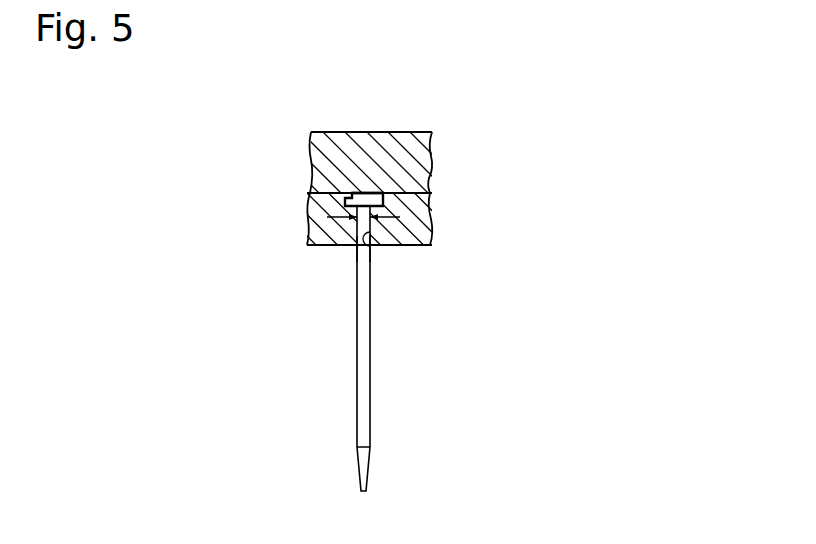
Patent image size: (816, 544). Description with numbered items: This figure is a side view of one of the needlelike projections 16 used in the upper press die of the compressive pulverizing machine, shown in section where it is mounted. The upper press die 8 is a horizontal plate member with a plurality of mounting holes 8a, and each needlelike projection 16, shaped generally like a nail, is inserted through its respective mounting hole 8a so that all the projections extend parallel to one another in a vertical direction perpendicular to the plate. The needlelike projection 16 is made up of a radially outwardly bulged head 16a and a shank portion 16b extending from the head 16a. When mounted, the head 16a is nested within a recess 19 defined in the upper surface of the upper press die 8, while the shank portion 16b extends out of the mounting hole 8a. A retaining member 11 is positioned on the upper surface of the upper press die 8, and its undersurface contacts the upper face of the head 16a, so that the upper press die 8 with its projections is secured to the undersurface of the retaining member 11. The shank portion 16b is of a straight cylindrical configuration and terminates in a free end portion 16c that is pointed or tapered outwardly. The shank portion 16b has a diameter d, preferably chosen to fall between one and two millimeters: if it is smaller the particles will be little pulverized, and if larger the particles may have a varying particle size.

The retaining member 11 is at (421, 132).
The upper press die 8 is at (377, 247).
The mounting hole 8a is at (372, 250).
The needlelike projection 16 is at (347, 289).
The head 16a is at (365, 193).
The shank portion 16b is at (350, 244).
The free end portion 16c is at (363, 493).
The recess 19 is at (381, 195).
The diameter d is at (345, 196).